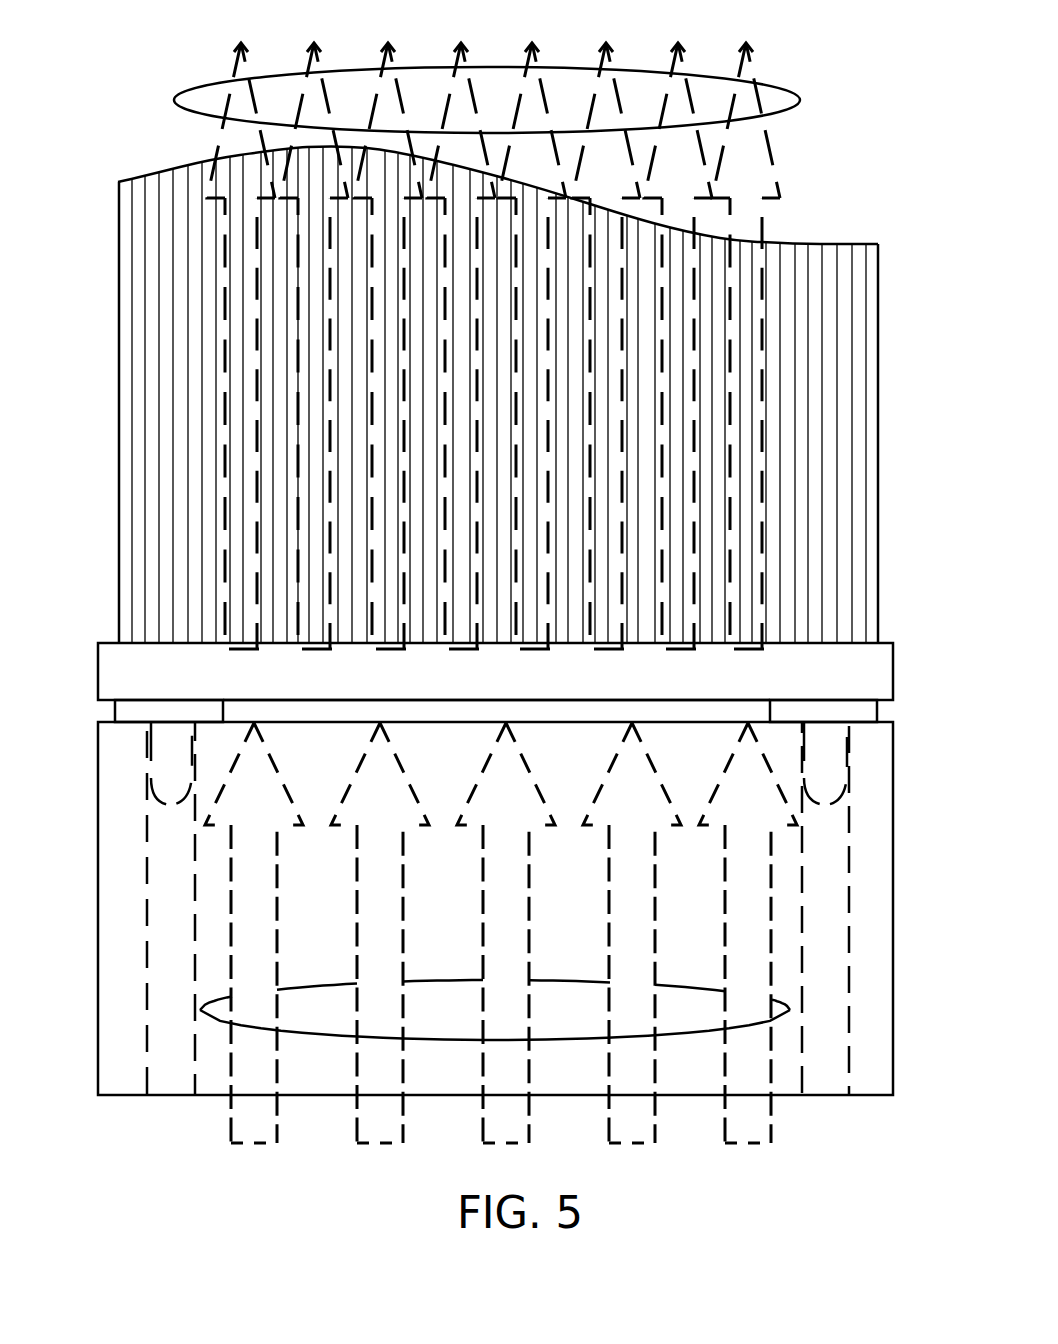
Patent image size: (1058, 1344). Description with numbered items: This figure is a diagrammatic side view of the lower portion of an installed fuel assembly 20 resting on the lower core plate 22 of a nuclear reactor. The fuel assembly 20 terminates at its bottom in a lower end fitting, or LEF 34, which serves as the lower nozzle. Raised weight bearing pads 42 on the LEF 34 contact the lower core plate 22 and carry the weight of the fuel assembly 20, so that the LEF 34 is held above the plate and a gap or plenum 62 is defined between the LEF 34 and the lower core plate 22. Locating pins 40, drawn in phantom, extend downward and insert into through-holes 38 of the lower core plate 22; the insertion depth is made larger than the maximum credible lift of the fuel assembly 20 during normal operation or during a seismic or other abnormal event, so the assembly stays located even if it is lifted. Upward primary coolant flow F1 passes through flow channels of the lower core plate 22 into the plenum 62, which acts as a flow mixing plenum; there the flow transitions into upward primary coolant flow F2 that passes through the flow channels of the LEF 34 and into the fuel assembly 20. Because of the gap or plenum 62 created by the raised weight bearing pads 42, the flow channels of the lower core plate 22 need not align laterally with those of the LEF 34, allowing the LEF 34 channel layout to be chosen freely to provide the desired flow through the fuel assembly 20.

The fuel assembly 20 is at (880, 382).
The lower core plate 22 is at (895, 1020).
The LEF (lower end fitting) 34 is at (895, 657).
The through-holes 38 is at (177, 834).
The locating pins 40 is at (165, 742).
The raised weight bearing pads 42 is at (145, 712).
The gap or plenum 62 is at (278, 715).
The upward primary coolant flow F1 is at (197, 1016).
The upward primary coolant flow F2 is at (175, 100).